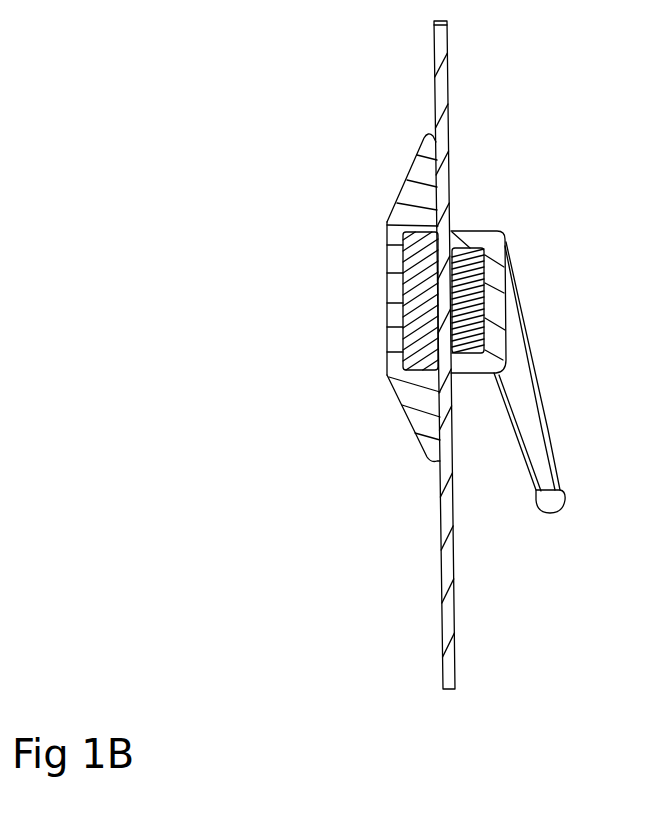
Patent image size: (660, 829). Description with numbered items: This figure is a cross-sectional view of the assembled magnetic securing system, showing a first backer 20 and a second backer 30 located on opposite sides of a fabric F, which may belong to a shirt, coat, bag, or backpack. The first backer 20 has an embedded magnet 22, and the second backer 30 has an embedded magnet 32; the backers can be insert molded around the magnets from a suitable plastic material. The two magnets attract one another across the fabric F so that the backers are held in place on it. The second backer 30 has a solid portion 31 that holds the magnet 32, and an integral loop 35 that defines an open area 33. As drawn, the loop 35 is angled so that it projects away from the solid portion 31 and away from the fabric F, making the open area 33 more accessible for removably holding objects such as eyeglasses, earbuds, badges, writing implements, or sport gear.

The first backer 20 is at (413, 172).
The magnet 22 is at (417, 303).
The second backer 30 is at (557, 462).
The solid portion 31 is at (505, 294).
The magnet 32 is at (467, 250).
The open area 33 is at (527, 402).
The loop 35 is at (553, 514).
The fabric F is at (449, 663).